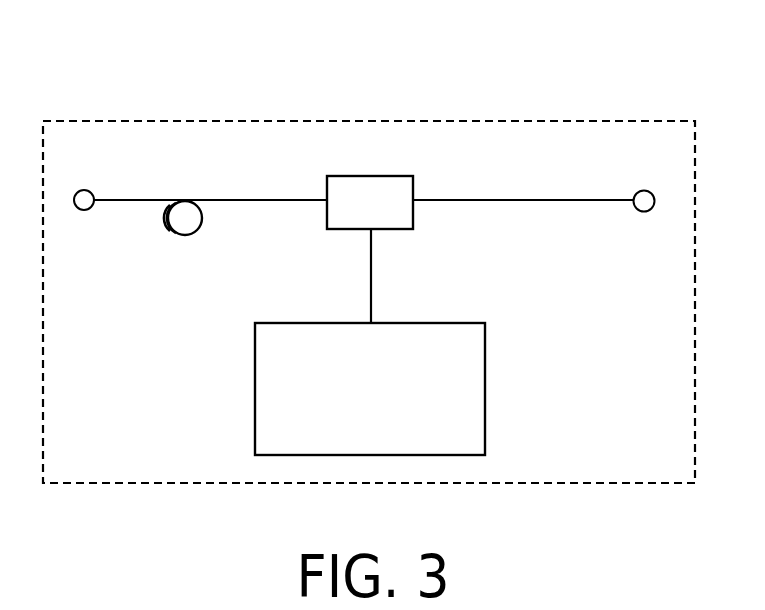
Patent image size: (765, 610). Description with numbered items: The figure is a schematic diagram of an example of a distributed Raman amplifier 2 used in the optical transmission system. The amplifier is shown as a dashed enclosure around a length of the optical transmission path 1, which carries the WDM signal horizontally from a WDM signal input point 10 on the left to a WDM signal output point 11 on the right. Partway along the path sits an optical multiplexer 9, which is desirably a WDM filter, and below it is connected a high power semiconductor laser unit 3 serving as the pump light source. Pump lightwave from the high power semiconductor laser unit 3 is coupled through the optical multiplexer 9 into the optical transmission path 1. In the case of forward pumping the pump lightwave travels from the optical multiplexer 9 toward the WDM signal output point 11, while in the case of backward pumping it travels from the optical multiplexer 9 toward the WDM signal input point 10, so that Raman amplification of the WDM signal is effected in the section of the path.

The optical transmission path 1 is at (186, 236).
The Raman amplifier 2 is at (598, 120).
The high power semiconductor laser unit (HPU) 3 is at (458, 322).
The optical multiplexer 9 is at (396, 230).
The WDM signal input point 10 is at (84, 211).
The WDM signal output point 11 is at (644, 212).